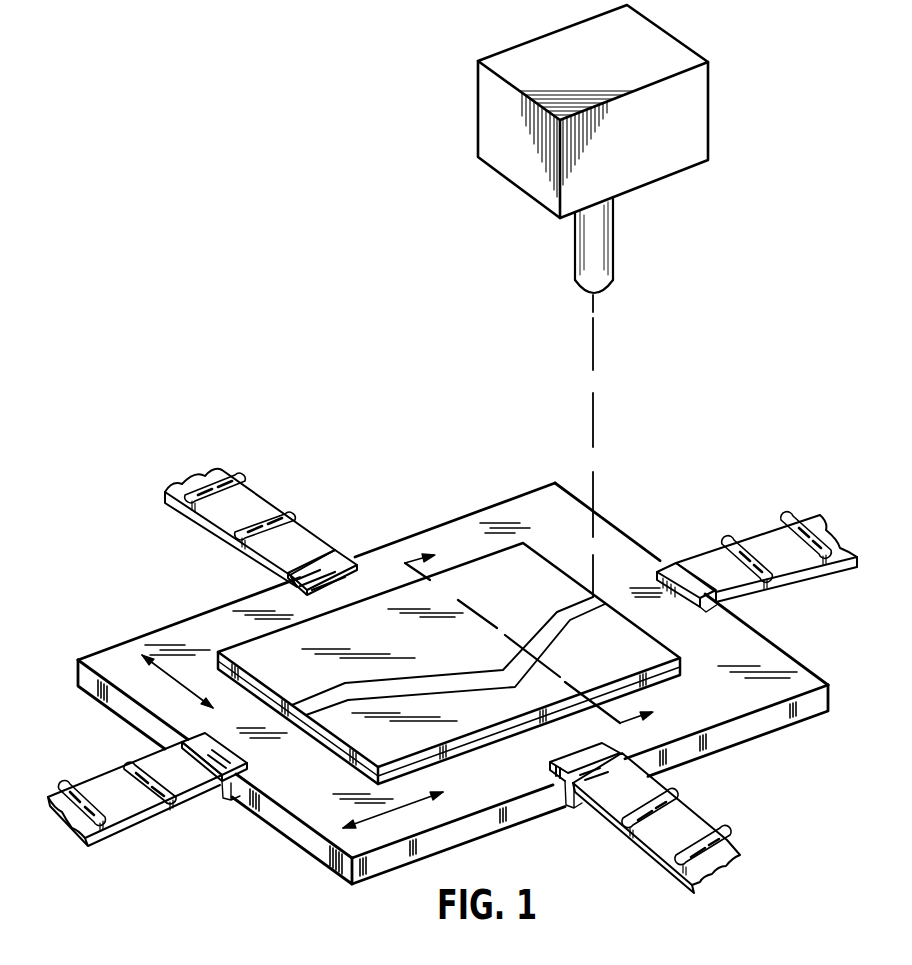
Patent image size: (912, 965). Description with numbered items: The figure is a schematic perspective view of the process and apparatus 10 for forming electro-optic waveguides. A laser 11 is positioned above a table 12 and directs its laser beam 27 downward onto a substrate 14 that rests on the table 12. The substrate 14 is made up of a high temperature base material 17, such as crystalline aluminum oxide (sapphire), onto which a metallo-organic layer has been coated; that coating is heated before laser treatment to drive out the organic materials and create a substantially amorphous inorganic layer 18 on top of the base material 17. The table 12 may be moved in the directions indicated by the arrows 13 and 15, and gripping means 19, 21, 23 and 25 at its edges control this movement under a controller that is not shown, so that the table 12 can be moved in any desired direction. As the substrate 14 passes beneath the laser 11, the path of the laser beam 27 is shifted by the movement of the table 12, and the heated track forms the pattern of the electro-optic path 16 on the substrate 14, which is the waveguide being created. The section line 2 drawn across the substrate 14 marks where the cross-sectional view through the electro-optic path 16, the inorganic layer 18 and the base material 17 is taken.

The process and apparatus 10 is at (662, 371).
The laser 11 is at (515, 60).
The table 12 is at (298, 809).
The arrow 13 is at (172, 679).
The substrate 14 is at (449, 645).
The arrow 15 is at (414, 806).
The electro-optic path 16 is at (550, 626).
The high temperature base material 17 is at (336, 752).
The amorphous inorganic layer 18 is at (440, 735).
The gripping means 19 is at (256, 504).
The gripping means 21 is at (773, 543).
The gripping means 23 is at (692, 823).
The gripping means 25 is at (147, 815).
The laser beam 27 is at (591, 333).
The section line 2- 2 is at (537, 631).